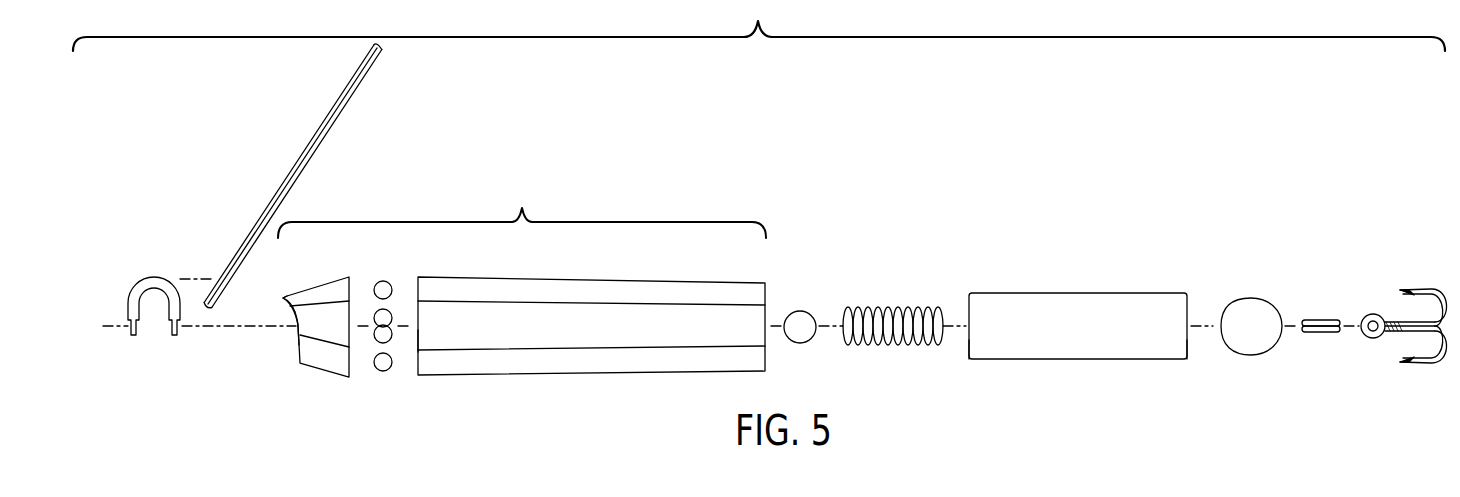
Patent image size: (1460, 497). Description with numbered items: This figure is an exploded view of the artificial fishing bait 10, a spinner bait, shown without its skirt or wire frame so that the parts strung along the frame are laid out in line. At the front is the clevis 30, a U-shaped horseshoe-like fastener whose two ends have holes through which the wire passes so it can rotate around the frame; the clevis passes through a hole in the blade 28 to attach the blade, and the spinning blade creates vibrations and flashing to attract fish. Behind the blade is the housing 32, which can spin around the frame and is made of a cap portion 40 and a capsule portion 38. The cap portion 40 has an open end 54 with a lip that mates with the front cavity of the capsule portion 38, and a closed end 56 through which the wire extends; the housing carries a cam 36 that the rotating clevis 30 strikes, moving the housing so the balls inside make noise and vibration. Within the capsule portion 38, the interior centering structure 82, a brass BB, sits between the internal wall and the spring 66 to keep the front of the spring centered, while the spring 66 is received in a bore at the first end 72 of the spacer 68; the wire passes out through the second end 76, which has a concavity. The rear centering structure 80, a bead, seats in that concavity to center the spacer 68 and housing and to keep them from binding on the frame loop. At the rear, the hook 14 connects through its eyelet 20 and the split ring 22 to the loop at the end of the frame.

The artificial fishing bait 10 is at (759, 25).
The hook 14 is at (1428, 352).
The eyelet 20 is at (1373, 315).
The split ring 22 is at (1322, 333).
The blade 28 is at (337, 125).
The clevis 30 is at (155, 283).
The housing 32 is at (522, 207).
The cam 36 is at (284, 297).
The capsule portion 38 is at (607, 362).
The cap portion 40 is at (305, 357).
The open end 54 is at (422, 340).
The closed end 56 is at (293, 341).
The spring 66 is at (880, 308).
The spacer 68 is at (1078, 310).
The first end 72 is at (979, 372).
The second end 76 is at (1175, 372).
The rear centering structure 80 is at (1250, 312).
The interior centering structure 82 is at (800, 323).